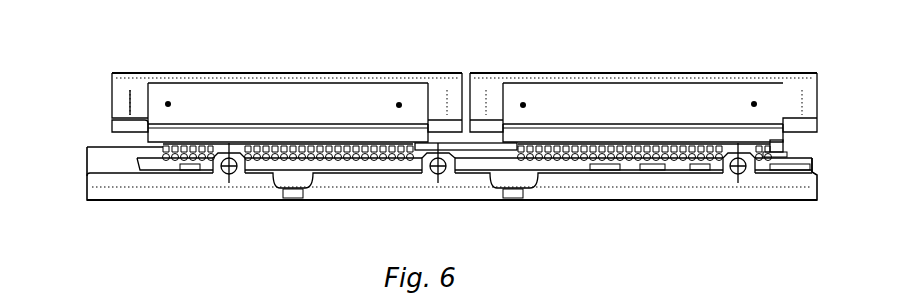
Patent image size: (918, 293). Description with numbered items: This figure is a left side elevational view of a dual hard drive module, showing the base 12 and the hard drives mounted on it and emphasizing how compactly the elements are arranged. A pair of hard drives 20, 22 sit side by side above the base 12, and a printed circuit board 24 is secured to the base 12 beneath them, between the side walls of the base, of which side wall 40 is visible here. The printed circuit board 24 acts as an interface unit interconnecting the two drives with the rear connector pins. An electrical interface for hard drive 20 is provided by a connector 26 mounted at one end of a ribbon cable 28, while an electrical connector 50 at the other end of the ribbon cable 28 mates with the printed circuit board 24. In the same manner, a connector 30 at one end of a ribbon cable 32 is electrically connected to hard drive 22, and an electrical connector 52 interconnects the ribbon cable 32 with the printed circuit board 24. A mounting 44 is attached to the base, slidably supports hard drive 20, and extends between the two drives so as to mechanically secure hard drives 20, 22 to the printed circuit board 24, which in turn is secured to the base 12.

The base 12 is at (798, 201).
The hard drive 20 is at (738, 73).
The hard drive 22 is at (310, 73).
The printed circuit board 24 is at (138, 160).
The connector 26 is at (583, 93).
The ribbon cable 28 is at (777, 135).
The connector 30 is at (220, 90).
The ribbon cable 32 is at (162, 130).
The side wall 40 is at (640, 188).
The mounting 44 is at (470, 150).
The electrical connector 50 is at (588, 157).
The electrical connector 52 is at (350, 157).